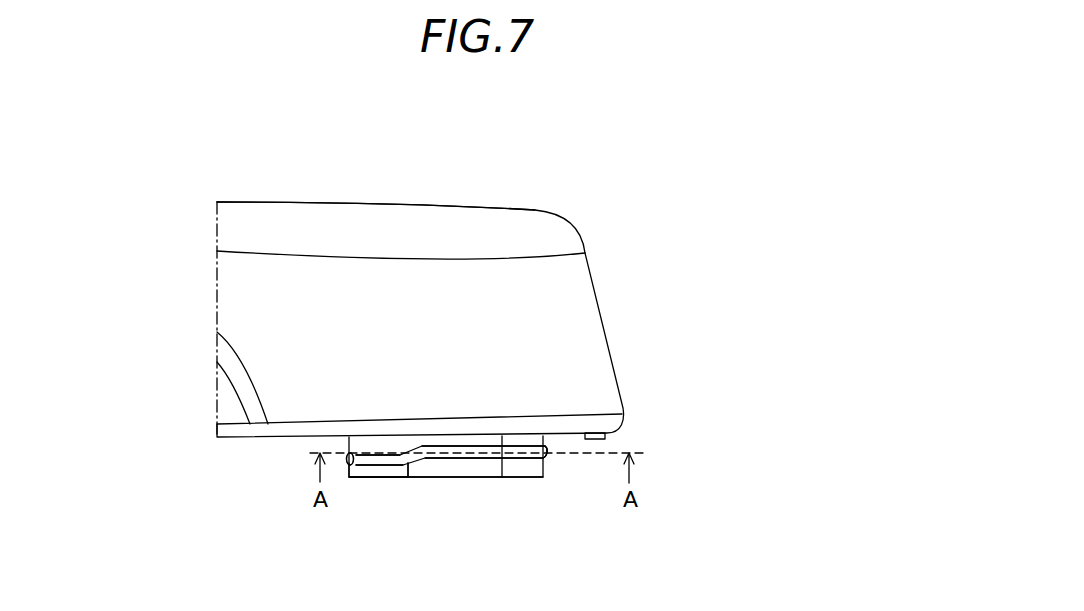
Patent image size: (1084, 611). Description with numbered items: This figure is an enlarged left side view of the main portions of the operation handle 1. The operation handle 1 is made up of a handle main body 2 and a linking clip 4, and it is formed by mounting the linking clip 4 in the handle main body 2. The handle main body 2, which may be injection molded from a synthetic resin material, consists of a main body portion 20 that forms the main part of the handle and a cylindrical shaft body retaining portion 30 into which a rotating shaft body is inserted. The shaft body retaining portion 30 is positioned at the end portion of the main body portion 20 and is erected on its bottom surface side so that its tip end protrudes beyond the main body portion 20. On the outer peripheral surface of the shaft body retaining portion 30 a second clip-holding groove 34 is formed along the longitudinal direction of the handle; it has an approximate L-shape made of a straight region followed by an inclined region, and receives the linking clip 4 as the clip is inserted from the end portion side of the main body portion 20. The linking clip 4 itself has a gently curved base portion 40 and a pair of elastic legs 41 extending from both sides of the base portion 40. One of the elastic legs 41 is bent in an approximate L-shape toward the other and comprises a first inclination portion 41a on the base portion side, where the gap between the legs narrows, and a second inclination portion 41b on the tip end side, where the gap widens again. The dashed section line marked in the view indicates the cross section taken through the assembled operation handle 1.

The operation handle 1 is at (580, 183).
The handle main body 2 is at (597, 288).
The main body portion 20 is at (407, 203).
The shaft body retaining portion 30 is at (543, 472).
The second clip-holding groove 34 is at (408, 478).
The linking clip 4 is at (478, 465).
The base portion 40 is at (547, 453).
The elastic legs 41 is at (420, 448).
The first inclination portion 41a is at (478, 448).
The second inclination portion 41b is at (371, 462).